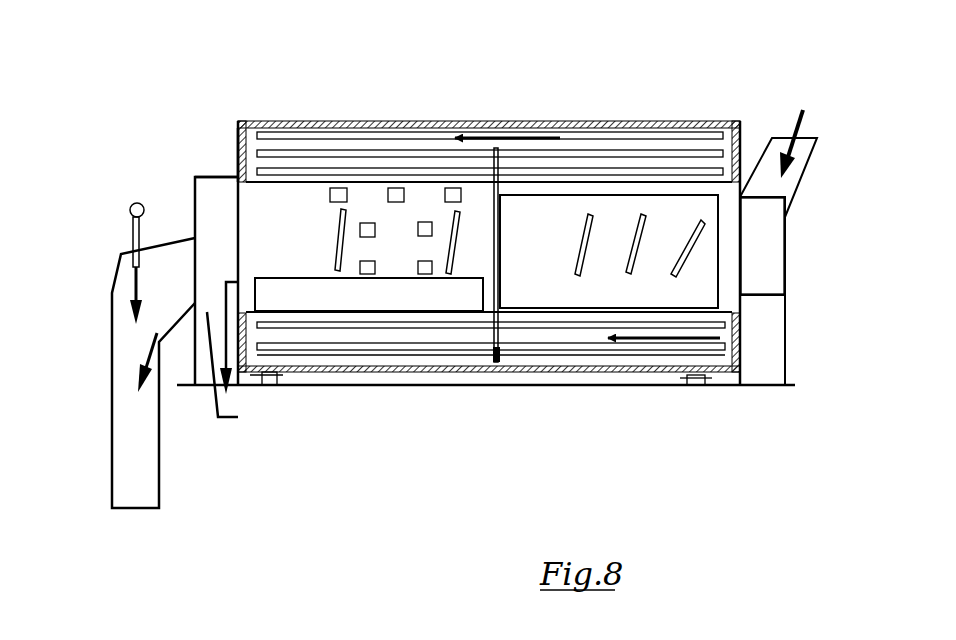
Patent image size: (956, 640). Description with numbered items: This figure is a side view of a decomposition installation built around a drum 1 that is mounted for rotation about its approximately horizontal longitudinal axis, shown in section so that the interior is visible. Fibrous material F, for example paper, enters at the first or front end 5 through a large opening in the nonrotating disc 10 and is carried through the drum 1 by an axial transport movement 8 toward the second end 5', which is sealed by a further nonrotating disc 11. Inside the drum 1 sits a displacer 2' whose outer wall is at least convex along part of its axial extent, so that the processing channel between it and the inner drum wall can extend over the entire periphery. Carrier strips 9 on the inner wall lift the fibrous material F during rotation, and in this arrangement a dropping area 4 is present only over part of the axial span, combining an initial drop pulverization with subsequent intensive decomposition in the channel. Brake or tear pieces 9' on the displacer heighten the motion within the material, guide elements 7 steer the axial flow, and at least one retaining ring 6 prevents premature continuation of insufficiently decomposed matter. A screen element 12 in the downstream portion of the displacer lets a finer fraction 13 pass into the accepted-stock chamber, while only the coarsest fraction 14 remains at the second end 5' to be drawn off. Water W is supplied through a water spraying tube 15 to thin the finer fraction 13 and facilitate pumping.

The drum 1 is at (697, 120).
The displacer 2' is at (609, 251).
The dropping area 4 is at (700, 278).
The first or front end 5 is at (781, 112).
The second end 5' is at (205, 110).
The retaining ring 6 is at (497, 362).
The guide elements 7 is at (345, 210).
The axial transport movement 8 is at (488, 137).
The carrier strips 9 is at (491, 428).
The brake pieces or tear pieces 9' is at (395, 163).
The nonrotating disc 10 is at (768, 410).
The nonrotating disc 11 is at (240, 162).
The screen element 12 is at (408, 297).
The finer fraction 13 is at (140, 378).
The coarsest fraction 14 is at (217, 390).
The water spraying tube 15 is at (128, 205).
The fibrous material F is at (780, 147).
The water W is at (130, 307).